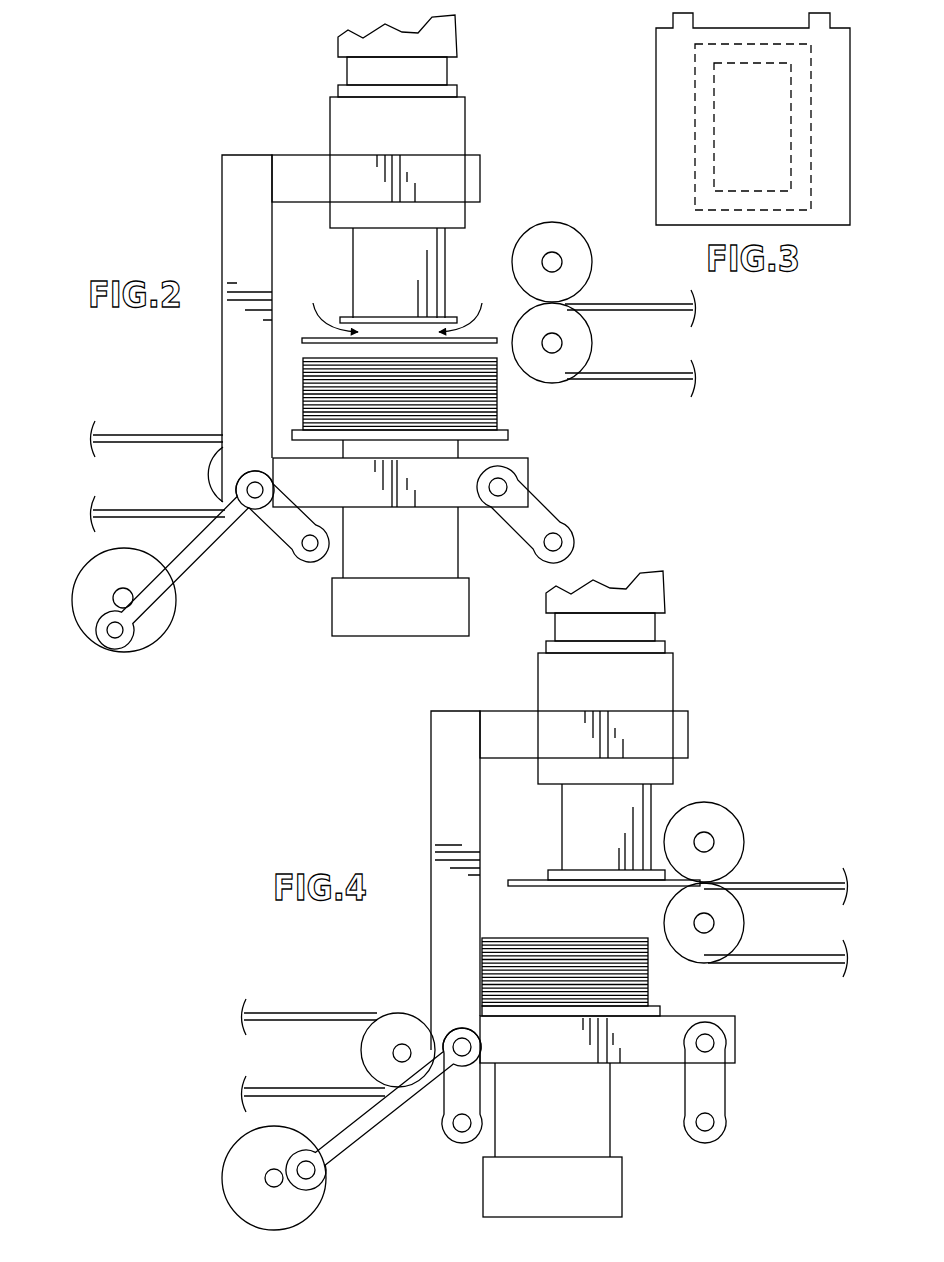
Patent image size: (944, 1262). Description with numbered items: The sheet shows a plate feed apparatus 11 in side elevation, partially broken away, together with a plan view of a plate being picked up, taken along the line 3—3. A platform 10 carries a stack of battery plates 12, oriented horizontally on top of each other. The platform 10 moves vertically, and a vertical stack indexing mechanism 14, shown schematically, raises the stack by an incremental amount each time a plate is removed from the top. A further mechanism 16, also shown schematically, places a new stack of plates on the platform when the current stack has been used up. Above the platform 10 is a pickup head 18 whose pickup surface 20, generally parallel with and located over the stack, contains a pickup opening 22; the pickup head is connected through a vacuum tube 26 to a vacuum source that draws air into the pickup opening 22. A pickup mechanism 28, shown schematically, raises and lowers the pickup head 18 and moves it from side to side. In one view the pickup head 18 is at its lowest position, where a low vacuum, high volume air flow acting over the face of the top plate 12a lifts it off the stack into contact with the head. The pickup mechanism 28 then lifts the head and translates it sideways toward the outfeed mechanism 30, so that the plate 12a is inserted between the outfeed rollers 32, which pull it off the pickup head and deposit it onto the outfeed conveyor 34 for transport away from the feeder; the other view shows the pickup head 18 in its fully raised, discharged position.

In FIG. 2, the platform 10 is at (509, 434).
In FIG. 4, the platform 10 is at (662, 1007).
In FIG. 2, the plate feed apparatus 11 is at (508, 206).
In FIG. 4, the plate feed apparatus 11 is at (714, 766).
In FIG. 2, the stack of battery plates 12 is at (498, 401).
In FIG. 3, the stack of battery plates 12 is at (655, 77).
In FIG. 4, the stack of battery plates 12 is at (650, 976).
In FIG. 2, the top plate 12a is at (387, 338).
In FIG. 4, the top plate 12a is at (608, 887).
In FIG. 2, the vertical stack indexing mechanism 14 is at (416, 618).
In FIG. 4, the vertical stack indexing mechanism 14 is at (569, 1198).
In FIG. 2, the stack placing mechanism 16 is at (156, 428).
In FIG. 4, the stack placing mechanism 16 is at (306, 1010).
In FIG. 2, the pickup head 18 is at (449, 288).
In FIG. 4, the pickup head 18 is at (558, 845).
In FIG. 3, the pickup surface 20 is at (700, 110).
In FIG. 3, the pickup opening 22 is at (733, 153).
In FIG. 2, the vacuum tube 26 is at (459, 37).
In FIG. 4, the vacuum tube 26 is at (667, 594).
In FIG. 2, the pickup mechanism 28 is at (248, 566).
In FIG. 4, the pickup mechanism 28 is at (396, 1150).
In FIG. 2, the outfeed mechanism 30 is at (603, 285).
In FIG. 4, the outfeed mechanism 30 is at (756, 865).
In FIG. 2, the outfeed rollers 32 is at (590, 250).
In FIG. 4, the outfeed rollers 32 is at (744, 828).
In FIG. 2, the outfeed conveyor 34 is at (625, 382).
In FIG. 4, the outfeed conveyor 34 is at (775, 963).
In FIG. 2, the section line 3 is at (315, 350).